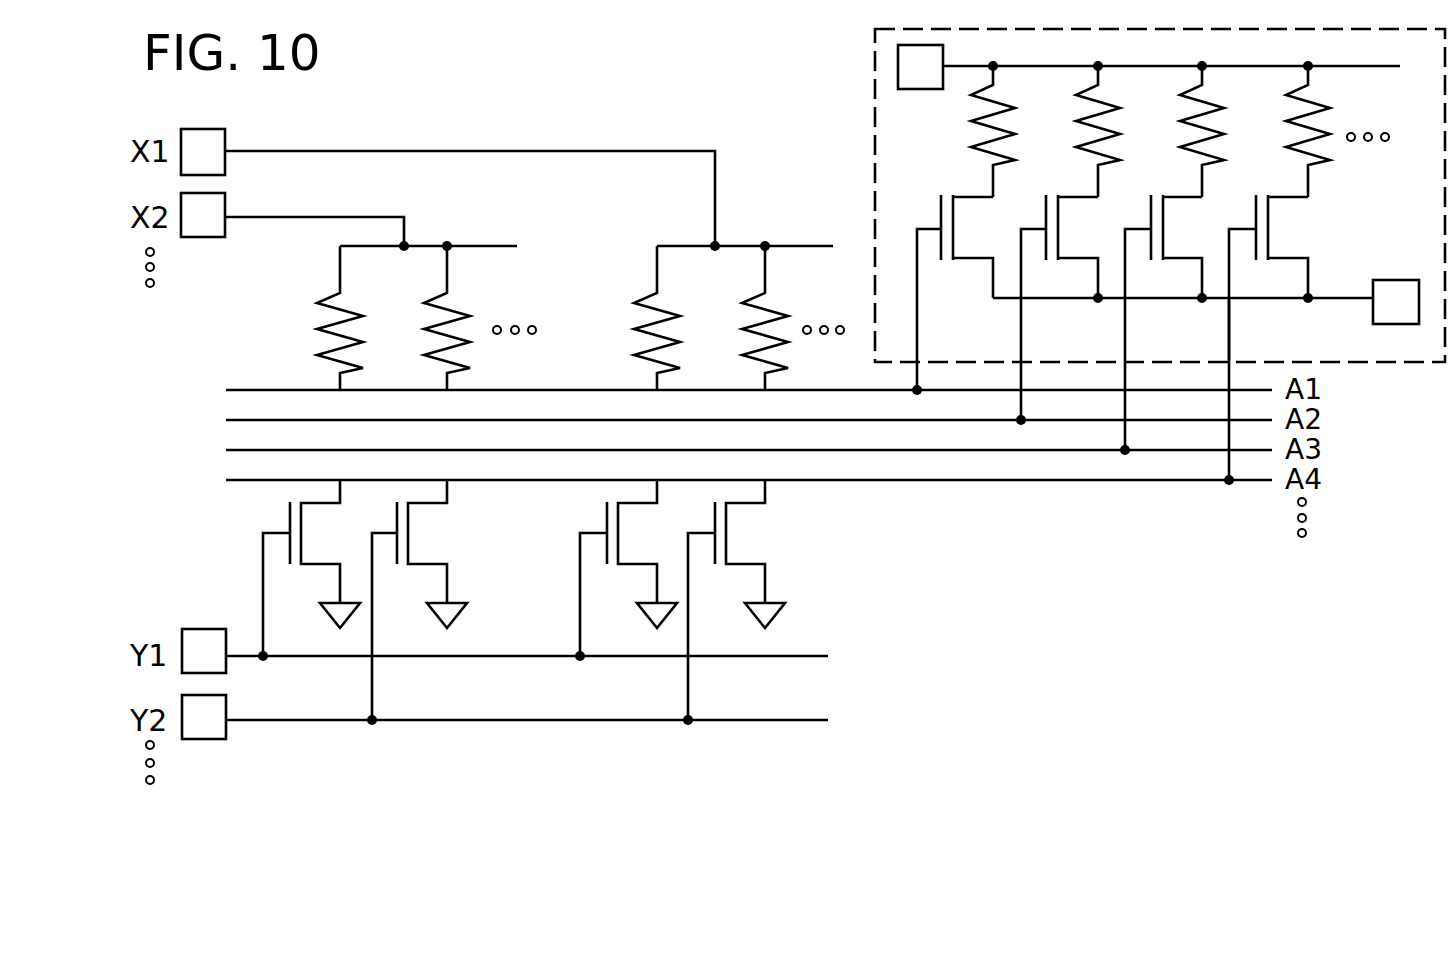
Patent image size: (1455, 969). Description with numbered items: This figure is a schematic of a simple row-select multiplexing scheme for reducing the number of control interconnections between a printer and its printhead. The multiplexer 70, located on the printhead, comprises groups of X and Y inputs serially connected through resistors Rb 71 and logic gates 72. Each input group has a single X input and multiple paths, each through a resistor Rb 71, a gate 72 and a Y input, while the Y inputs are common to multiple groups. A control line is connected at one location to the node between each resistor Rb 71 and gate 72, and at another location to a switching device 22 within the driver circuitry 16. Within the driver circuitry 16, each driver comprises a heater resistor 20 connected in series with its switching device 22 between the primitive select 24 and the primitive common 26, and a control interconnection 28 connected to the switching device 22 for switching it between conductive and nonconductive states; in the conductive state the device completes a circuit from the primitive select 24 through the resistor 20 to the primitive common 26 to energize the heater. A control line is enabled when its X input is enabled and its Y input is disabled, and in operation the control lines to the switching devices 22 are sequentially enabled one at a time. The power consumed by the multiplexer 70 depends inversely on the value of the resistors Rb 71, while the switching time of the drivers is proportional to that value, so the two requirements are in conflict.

The driver circuitry 16 is at (875, 65).
The heater resistor 20 is at (1316, 143).
The switching device 22 is at (960, 226).
The primitive select 24 is at (1340, 68).
The primitive common 26 is at (1347, 300).
The control interconnection 28 is at (1230, 313).
The multiplexer 70 is at (212, 432).
The resistor Rb 71 is at (330, 293).
The logic gate 72 is at (288, 520).